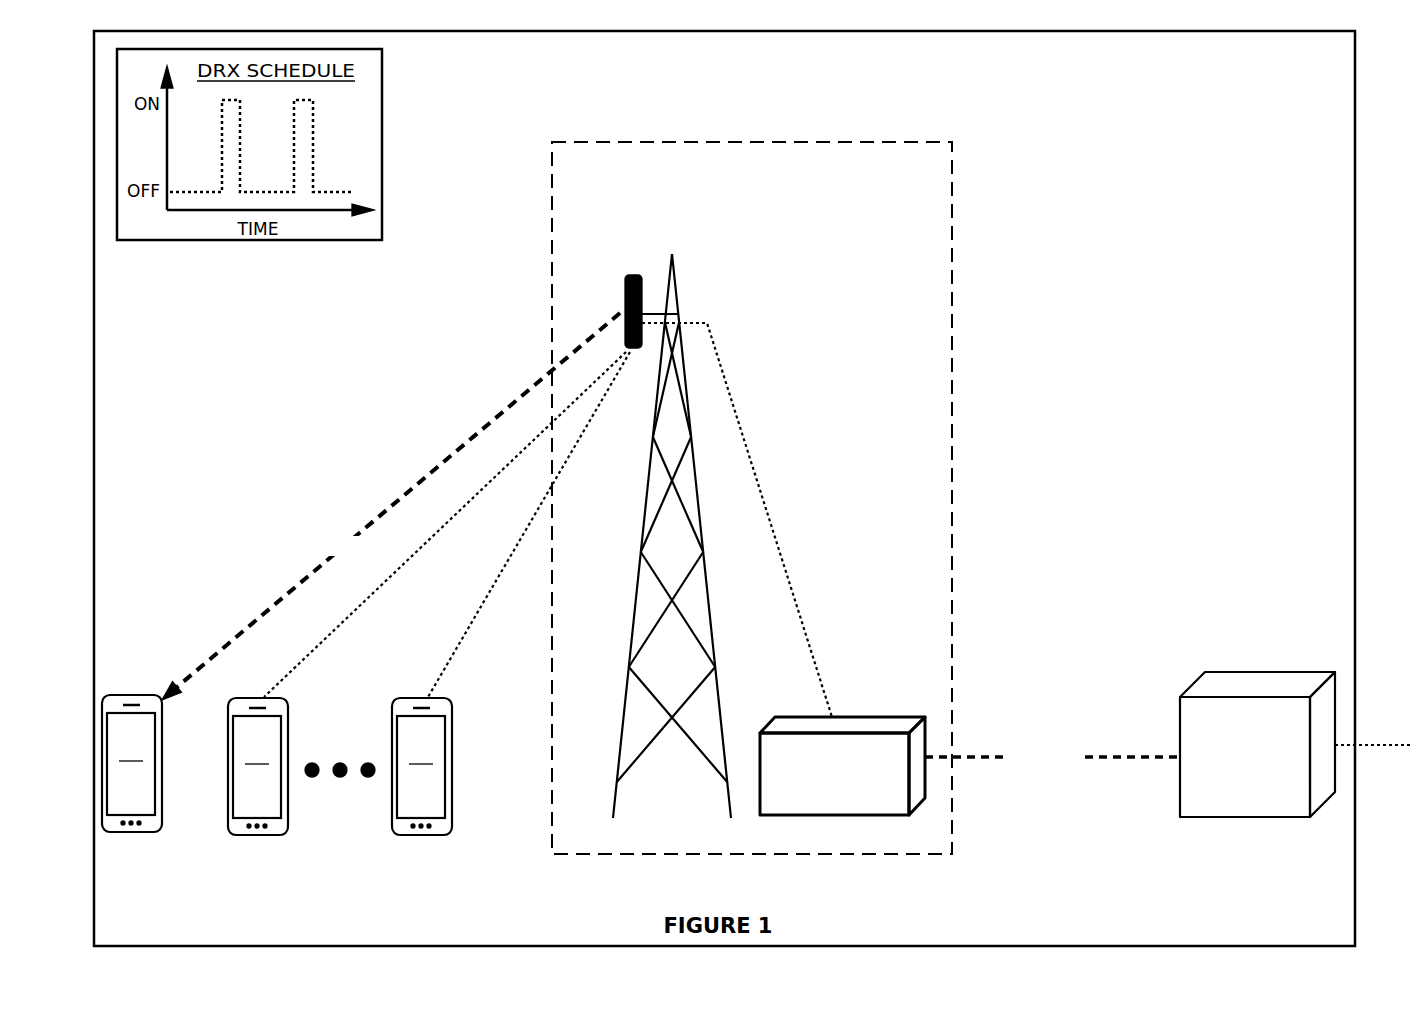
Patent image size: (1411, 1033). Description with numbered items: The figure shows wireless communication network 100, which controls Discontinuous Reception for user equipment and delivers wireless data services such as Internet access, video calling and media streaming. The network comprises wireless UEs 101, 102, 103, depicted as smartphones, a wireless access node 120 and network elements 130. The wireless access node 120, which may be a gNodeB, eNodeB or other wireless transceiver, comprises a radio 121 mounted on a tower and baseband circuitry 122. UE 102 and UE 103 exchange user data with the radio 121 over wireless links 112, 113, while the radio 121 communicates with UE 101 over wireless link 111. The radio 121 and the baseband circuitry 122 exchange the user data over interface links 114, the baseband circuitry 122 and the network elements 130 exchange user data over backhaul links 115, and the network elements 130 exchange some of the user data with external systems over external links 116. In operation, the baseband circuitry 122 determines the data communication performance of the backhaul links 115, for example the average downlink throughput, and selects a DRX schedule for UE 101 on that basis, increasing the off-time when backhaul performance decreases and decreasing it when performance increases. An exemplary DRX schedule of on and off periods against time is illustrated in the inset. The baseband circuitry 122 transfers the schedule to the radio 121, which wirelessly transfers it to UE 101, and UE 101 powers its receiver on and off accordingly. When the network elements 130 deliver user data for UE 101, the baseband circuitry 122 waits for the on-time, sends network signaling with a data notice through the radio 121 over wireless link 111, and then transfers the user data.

The wireless communication network 100 is at (940, 62).
The user equipment 101 is at (116, 786).
The user equipment 102 is at (242, 789).
The user equipment 103 is at (406, 789).
The wireless link 111 is at (433, 472).
The wireless link 112 is at (355, 613).
The wireless link 113 is at (458, 645).
The interface links 114 is at (762, 498).
The backhaul links 115 is at (1138, 757).
The external links 116 is at (1384, 745).
The wireless access node 120 is at (612, 176).
The radio 121 is at (630, 277).
The baseband circuitry 122 is at (842, 766).
The network elements 130 is at (1257, 744).